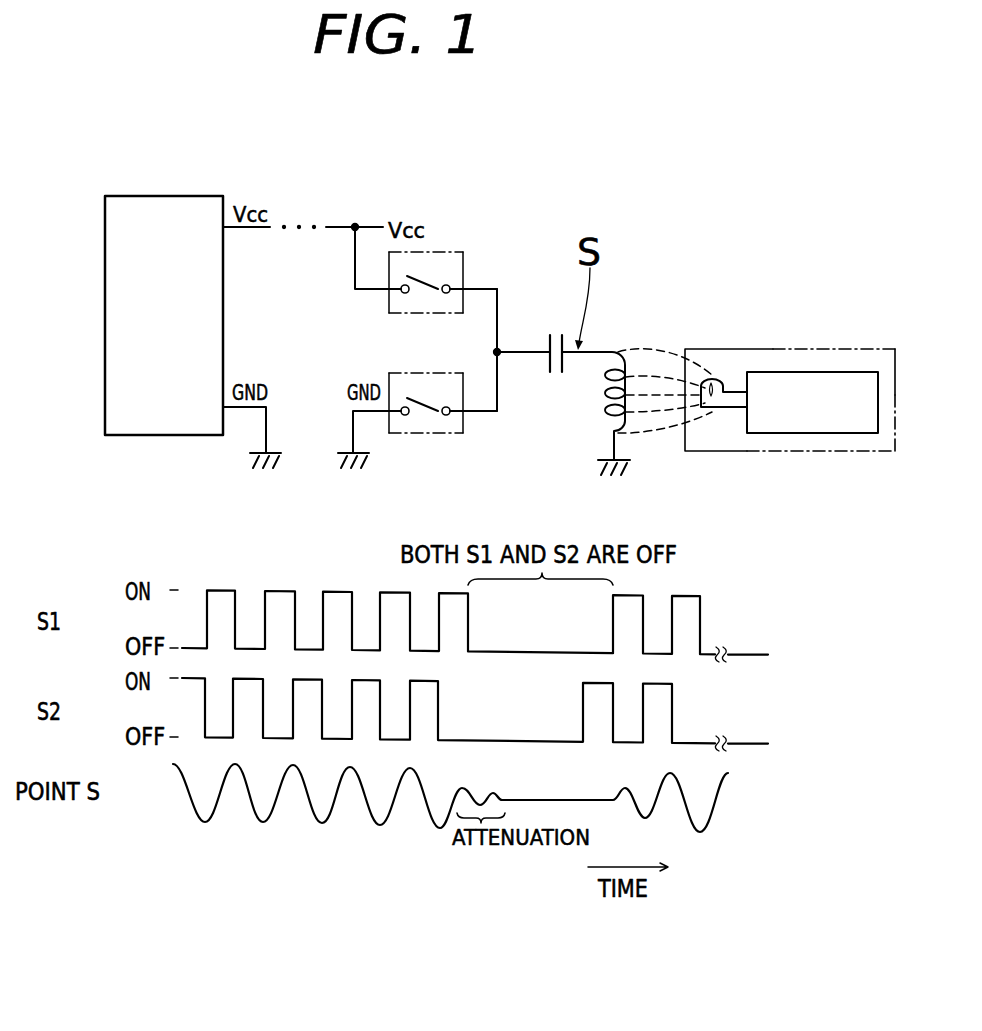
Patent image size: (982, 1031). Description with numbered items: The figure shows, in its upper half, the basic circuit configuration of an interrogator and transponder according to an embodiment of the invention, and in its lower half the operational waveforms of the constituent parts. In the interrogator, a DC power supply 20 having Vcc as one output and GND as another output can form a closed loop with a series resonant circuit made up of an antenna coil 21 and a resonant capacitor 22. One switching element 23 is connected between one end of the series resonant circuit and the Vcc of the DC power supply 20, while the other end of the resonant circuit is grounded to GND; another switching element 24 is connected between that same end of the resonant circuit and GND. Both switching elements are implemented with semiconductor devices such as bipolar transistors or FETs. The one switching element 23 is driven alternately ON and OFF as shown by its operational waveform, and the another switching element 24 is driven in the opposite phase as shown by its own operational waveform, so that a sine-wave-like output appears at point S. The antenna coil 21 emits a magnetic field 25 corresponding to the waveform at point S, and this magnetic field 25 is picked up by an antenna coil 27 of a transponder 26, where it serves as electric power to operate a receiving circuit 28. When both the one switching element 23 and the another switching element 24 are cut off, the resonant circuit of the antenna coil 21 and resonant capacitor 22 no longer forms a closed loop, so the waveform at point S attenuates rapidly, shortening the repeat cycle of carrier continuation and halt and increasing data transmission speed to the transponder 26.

The DC power supply 20 is at (170, 208).
The antenna coil 21 is at (603, 411).
The resonant capacitor 22 is at (548, 350).
The one switching element 23 is at (453, 255).
The another switching element 24 is at (458, 420).
The magnetic field 25 is at (657, 350).
The transponder 26 is at (747, 443).
The antenna coil 27 is at (713, 381).
The receiving circuit 28 is at (800, 372).